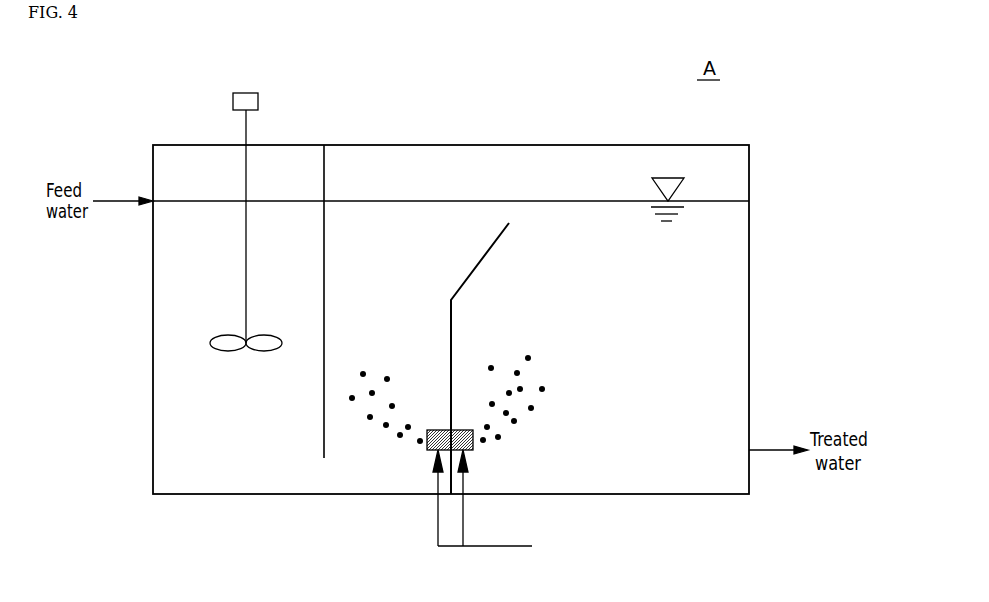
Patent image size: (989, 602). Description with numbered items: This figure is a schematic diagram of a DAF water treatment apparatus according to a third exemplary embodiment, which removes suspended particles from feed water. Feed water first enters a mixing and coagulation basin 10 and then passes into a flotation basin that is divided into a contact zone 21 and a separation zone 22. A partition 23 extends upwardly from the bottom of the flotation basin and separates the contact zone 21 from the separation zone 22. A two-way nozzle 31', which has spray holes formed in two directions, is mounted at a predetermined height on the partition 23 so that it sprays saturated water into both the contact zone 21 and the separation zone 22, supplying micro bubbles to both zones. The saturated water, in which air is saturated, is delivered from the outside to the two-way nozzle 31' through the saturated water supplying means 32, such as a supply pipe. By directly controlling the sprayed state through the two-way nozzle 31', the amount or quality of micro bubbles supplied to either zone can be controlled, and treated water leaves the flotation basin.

The mixing and coagulation basin 10 is at (267, 252).
The contact zone 21 is at (385, 271).
The separation zone 22 is at (558, 271).
The partition 23 is at (451, 337).
The two-way nozzle 31' is at (433, 450).
The saturated water supplying means 32 is at (487, 546).